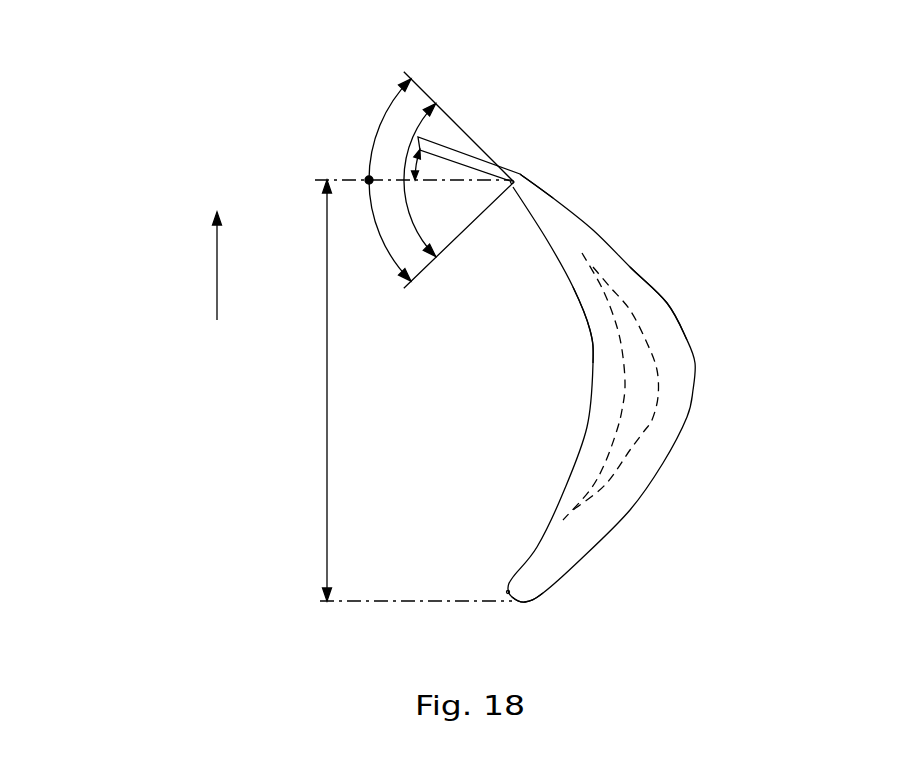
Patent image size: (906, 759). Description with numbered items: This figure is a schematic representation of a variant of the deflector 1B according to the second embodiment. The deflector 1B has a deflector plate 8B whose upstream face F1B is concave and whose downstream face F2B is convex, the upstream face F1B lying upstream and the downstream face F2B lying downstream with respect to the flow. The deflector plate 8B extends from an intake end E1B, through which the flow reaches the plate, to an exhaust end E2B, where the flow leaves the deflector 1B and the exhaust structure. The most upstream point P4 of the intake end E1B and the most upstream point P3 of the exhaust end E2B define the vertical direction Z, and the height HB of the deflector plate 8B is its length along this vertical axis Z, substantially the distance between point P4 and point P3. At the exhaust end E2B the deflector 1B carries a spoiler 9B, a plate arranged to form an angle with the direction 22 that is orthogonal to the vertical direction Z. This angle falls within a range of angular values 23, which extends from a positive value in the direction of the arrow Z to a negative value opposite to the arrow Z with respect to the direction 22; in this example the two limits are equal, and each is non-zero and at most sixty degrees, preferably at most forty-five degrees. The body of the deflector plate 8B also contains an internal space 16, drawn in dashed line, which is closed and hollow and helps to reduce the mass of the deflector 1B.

The deflector 1B is at (599, 346).
The deflector plate 8B is at (686, 371).
The spoiler 9B is at (432, 137).
The internal space 16 is at (630, 450).
The direction 22 is at (330, 177).
The range of values 23 is at (404, 197).
The intake end E1B is at (532, 610).
The exhaust end E2B is at (532, 166).
The upstream face F1B is at (574, 358).
The downstream face F2B is at (690, 297).
The most upstream point of the exhaust end P3 is at (506, 203).
The most upstream point of the intake end P4 is at (495, 588).
The height of the deflector plate HB is at (325, 378).
The vertical direction Z is at (212, 272).